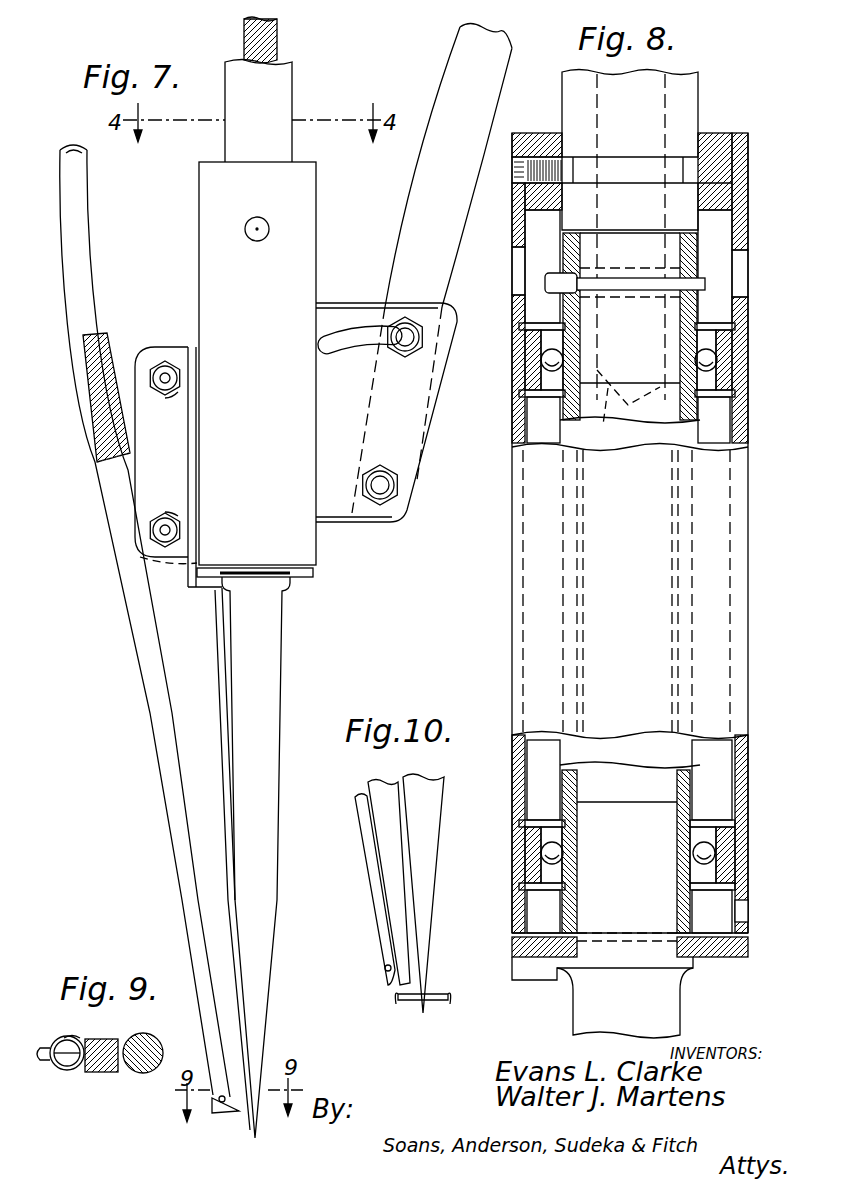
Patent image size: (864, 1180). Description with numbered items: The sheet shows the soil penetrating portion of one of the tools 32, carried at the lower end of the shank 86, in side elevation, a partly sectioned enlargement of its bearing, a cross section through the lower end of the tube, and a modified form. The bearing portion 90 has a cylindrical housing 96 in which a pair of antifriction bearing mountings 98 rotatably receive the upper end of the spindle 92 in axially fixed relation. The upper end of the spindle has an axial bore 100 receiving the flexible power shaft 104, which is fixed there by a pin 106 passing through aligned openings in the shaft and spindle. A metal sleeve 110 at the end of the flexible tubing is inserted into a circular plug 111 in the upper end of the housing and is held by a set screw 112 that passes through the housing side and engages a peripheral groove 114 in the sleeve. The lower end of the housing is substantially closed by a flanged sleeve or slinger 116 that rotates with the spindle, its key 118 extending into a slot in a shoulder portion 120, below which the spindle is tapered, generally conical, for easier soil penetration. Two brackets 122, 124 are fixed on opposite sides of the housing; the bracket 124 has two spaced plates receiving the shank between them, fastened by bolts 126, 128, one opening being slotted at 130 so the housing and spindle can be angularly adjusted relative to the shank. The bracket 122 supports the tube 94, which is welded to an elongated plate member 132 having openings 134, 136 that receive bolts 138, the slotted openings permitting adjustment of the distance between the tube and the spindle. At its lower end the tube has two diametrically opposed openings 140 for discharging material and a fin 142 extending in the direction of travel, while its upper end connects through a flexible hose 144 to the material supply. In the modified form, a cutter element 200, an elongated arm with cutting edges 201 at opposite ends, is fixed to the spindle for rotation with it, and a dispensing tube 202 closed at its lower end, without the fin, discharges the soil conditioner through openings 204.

In FIG. 7, the tools 32 is at (278, 467).
In FIG. 8, the tools 32 is at (642, 630).
In FIG. 7, the shank 86 is at (437, 83).
In FIG. 7, the bearing portion 90 is at (197, 268).
In FIG. 7, the spindle 92 is at (290, 688).
In FIG. 9, the spindle 92 is at (152, 1041).
In FIG. 10, the spindle 92 is at (430, 862).
In FIG. 8, the spindle 92 is at (568, 1020).
In FIG. 7, the tube 94 is at (153, 723).
In FIG. 9, the tube 94 is at (57, 1041).
In FIG. 7, the cylindrical housing 96 is at (305, 238).
In FIG. 8, the cylindrical housing 96 is at (512, 218).
In FIG. 8, the antifriction bearing mountings 98 is at (728, 360).
In FIG. 8, the bore 100 is at (623, 409).
In FIG. 7, the flexible power shaft 104 is at (280, 35).
In FIG. 8, the pin 106 is at (545, 282).
In FIG. 7, the sleeve 110 is at (292, 95).
In FIG. 8, the sleeve 110 is at (690, 92).
In FIG. 8, the circular plug 111 is at (722, 134).
In FIG. 8, the set screw 112 is at (542, 162).
In FIG. 8, the peripheral groove 114 is at (700, 182).
In FIG. 8, the flanged sleeve 116 is at (748, 947).
In FIG. 8, the key 118 is at (505, 970).
In FIG. 8, the shoulder portion 120 is at (690, 968).
In FIG. 7, the bracket 122 is at (188, 350).
In FIG. 7, the bracket 124 is at (352, 305).
In FIG. 7, the bolt 126 is at (402, 486).
In FIG. 7, the bolt 128 is at (430, 326).
In FIG. 7, the slot 130 is at (355, 350).
In FIG. 7, the elongated plate member 132 is at (188, 773).
In FIG. 9, the elongated plate member 132 is at (110, 1075).
In FIG. 10, the elongated plate member 132 is at (380, 836).
In FIG. 7, the opening 134 is at (182, 533).
In FIG. 7, the opening 136 is at (180, 375).
In FIG. 7, the bolts 138 is at (180, 390).
In FIG. 7, the openings 140 is at (216, 1105).
In FIG. 9, the openings 140 is at (80, 1037).
In FIG. 7, the fin 142 is at (228, 1114).
In FIG. 9, the fin 142 is at (42, 1062).
In FIG. 7, the flexible hose 144 is at (86, 208).
In FIG. 10, the cutter element 200 is at (432, 994).
In FIG. 10, the cutting edges 201 is at (398, 998).
In FIG. 10, the dispensing tube 202 is at (370, 875).
In FIG. 10, the openings 204 is at (385, 968).